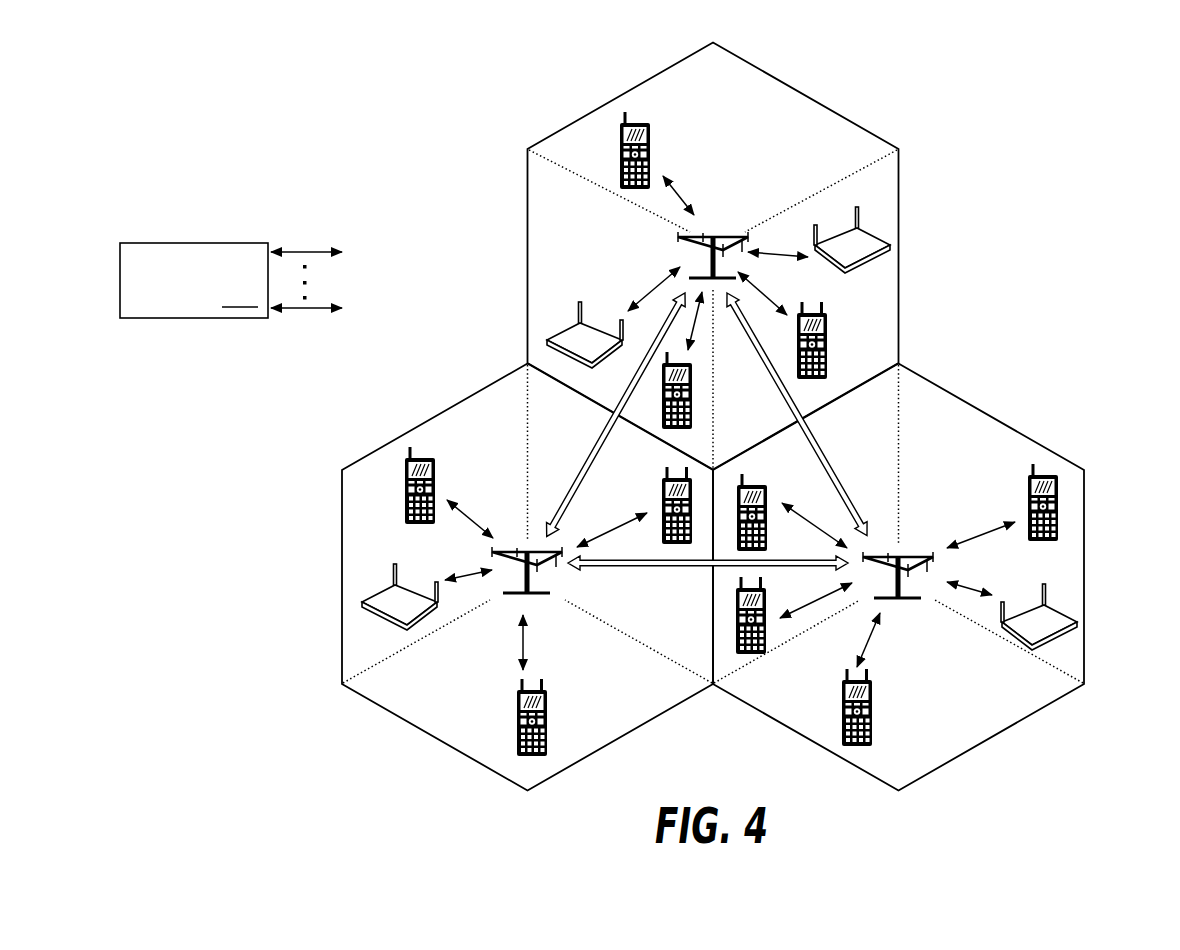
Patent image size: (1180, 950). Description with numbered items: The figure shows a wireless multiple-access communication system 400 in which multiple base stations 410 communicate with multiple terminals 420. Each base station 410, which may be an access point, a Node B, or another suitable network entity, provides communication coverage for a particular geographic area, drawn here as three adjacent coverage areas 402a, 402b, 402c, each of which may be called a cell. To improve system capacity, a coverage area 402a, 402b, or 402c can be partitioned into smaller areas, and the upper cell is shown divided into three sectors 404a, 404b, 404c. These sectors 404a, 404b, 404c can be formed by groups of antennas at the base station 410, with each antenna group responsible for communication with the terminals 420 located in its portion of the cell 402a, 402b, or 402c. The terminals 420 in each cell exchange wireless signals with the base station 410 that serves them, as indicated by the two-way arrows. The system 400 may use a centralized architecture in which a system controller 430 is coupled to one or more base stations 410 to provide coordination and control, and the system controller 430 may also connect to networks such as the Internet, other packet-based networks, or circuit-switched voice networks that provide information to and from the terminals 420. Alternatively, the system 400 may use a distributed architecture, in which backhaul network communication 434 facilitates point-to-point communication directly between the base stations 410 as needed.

The wireless multiple-access communication system 400 is at (240, 82).
The coverage area 402a is at (755, 66).
The coverage area 402b is at (473, 395).
The coverage area 402c is at (963, 401).
The sector 404a is at (682, 92).
The sector 404b is at (535, 227).
The sector 404c is at (845, 307).
The base station 410 is at (722, 236).
The terminal 420 is at (619, 128).
The system controller 430 is at (274, 281).
The backhaul network communication 434 is at (578, 481).